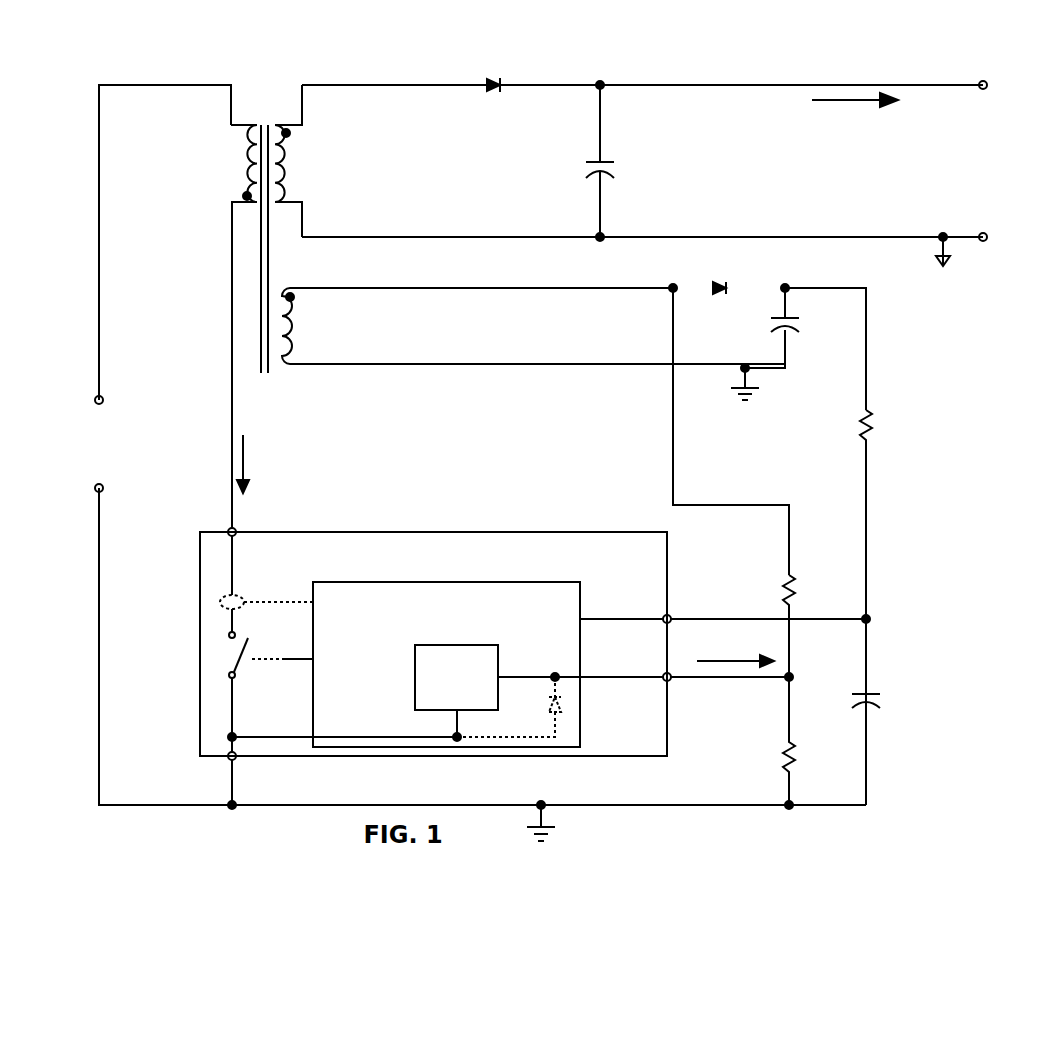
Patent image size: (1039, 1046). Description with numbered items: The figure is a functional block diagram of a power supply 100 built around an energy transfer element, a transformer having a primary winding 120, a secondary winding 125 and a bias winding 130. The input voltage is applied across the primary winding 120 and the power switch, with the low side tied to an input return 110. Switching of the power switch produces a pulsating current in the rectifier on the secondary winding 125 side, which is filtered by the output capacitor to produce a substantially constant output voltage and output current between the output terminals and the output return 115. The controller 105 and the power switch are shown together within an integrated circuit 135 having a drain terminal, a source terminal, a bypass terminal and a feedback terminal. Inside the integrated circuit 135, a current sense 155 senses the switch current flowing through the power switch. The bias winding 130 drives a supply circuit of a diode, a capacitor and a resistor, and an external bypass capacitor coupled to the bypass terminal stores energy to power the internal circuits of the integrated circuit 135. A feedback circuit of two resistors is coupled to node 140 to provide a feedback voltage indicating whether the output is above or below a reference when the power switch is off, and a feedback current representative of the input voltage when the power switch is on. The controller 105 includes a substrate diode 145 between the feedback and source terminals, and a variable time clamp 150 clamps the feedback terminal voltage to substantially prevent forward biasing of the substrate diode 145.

The power supply 100 is at (525, 51).
The controller 105 is at (548, 580).
The input return 110 is at (555, 815).
The output return 115 is at (955, 249).
The primary winding 120 is at (230, 157).
The secondary winding 125 is at (305, 162).
The bias winding 130 is at (303, 372).
The integrated circuit 135 is at (453, 527).
The node 140 is at (667, 293).
The substrate diode 145 is at (549, 700).
The variable time clamp 150 is at (505, 652).
The current sense 155 is at (241, 595).